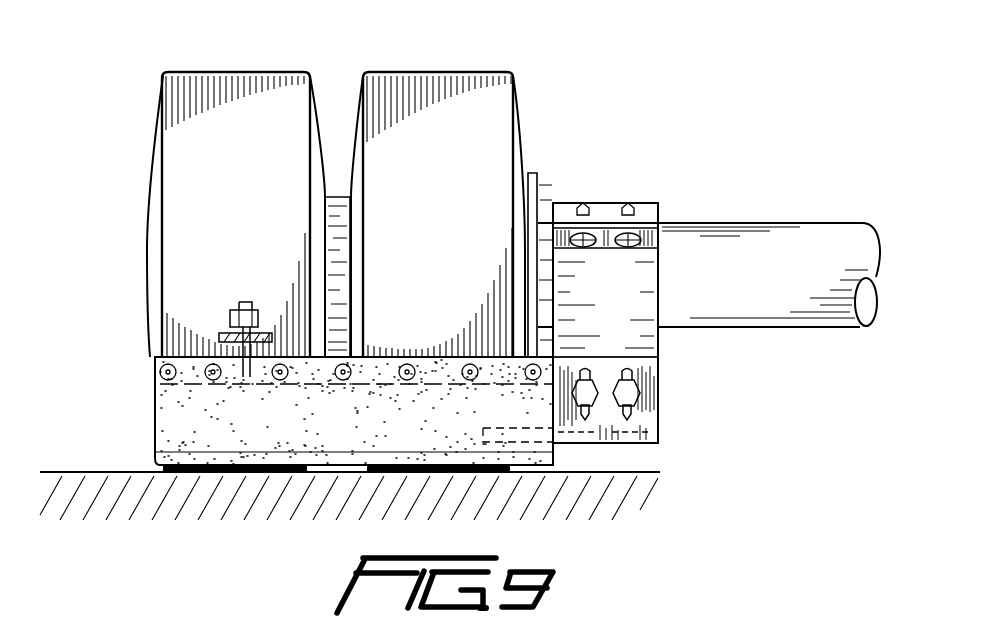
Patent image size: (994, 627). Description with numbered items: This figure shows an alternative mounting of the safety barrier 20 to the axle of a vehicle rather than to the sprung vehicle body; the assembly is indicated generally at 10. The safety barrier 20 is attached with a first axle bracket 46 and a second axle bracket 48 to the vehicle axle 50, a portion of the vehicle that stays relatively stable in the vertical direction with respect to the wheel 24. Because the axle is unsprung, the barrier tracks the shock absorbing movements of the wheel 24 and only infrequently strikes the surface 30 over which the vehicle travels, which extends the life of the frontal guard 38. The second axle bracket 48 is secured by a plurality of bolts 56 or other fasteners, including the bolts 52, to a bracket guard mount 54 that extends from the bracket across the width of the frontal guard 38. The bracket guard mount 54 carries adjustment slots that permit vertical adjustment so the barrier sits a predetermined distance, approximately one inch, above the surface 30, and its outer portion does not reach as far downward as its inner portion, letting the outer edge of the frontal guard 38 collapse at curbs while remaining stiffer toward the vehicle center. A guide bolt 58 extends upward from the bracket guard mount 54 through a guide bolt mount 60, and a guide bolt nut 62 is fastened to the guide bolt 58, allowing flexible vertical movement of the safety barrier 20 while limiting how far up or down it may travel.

The section line of apparatus 10 is at (707, 88).
The safety barrier 20 is at (152, 460).
The wheel 24 is at (182, 72).
The surface 30 is at (597, 478).
The frontal guard 38 is at (230, 440).
The first axle bracket 46 is at (605, 212).
The second axle bracket 48 is at (623, 285).
The vehicle axle 50 is at (828, 235).
The bolt 52 is at (580, 236).
The bracket guard mount 54 is at (652, 418).
The bolts 56 is at (590, 383).
The guide bolt 58 is at (238, 300).
The guide bolt mount 60 is at (192, 337).
The guide bolt nut 62 is at (228, 318).